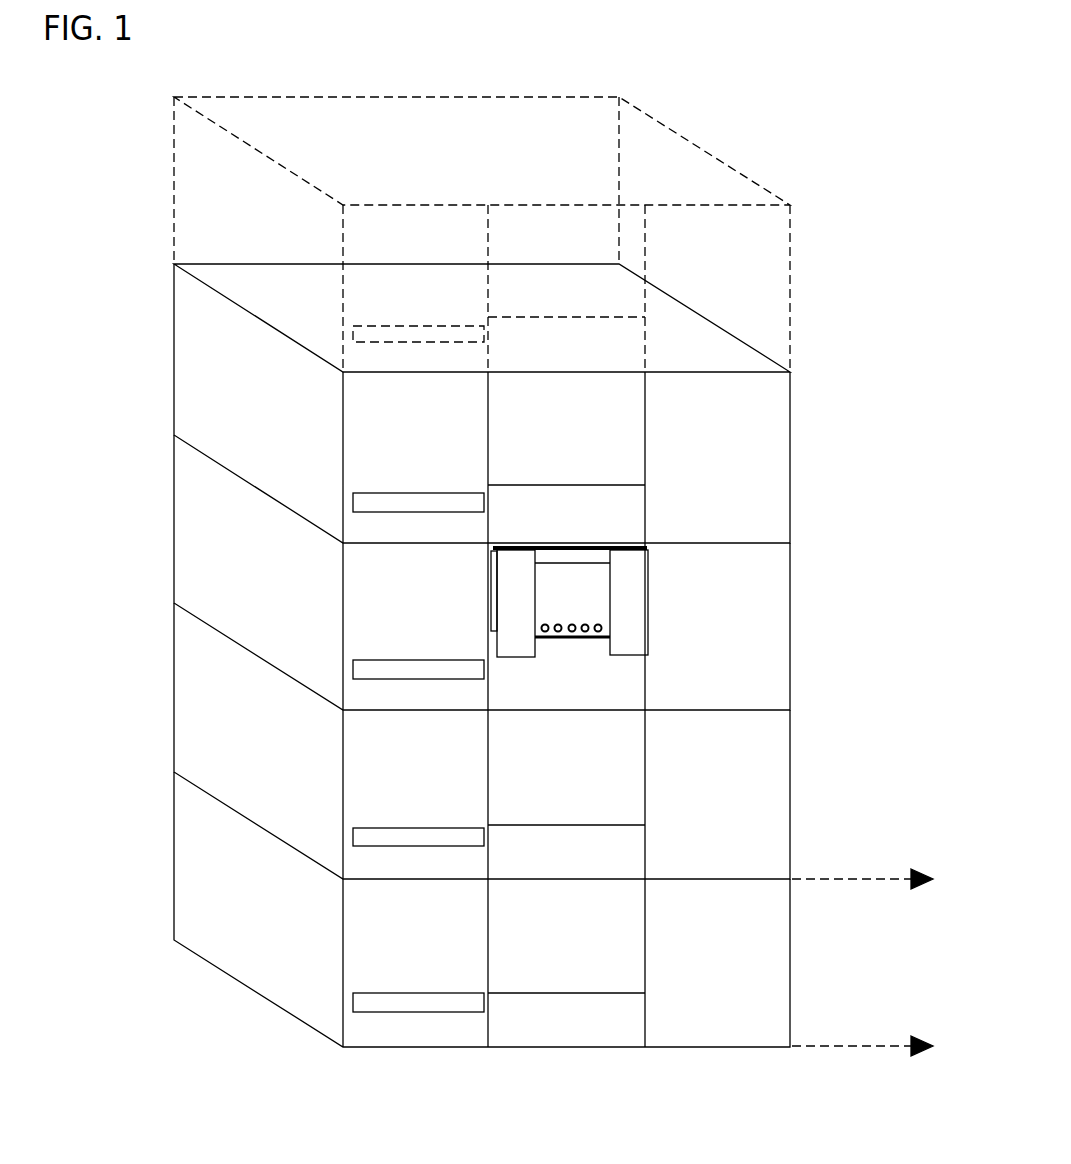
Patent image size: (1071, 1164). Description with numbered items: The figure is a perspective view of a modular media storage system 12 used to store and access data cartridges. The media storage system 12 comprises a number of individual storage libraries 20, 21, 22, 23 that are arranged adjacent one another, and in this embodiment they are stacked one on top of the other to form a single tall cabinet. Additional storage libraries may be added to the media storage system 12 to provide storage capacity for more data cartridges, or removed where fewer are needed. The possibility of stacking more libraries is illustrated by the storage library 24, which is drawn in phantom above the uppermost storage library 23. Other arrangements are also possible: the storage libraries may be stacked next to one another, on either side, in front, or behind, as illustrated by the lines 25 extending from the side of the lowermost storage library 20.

The media storage system 12 is at (708, 112).
The storage library 20 is at (174, 885).
The storage library 21 is at (174, 718).
The storage library 22 is at (174, 553).
The storage library 23 is at (174, 383).
The storage library 24 is at (174, 210).
The lines 25 is at (820, 881).